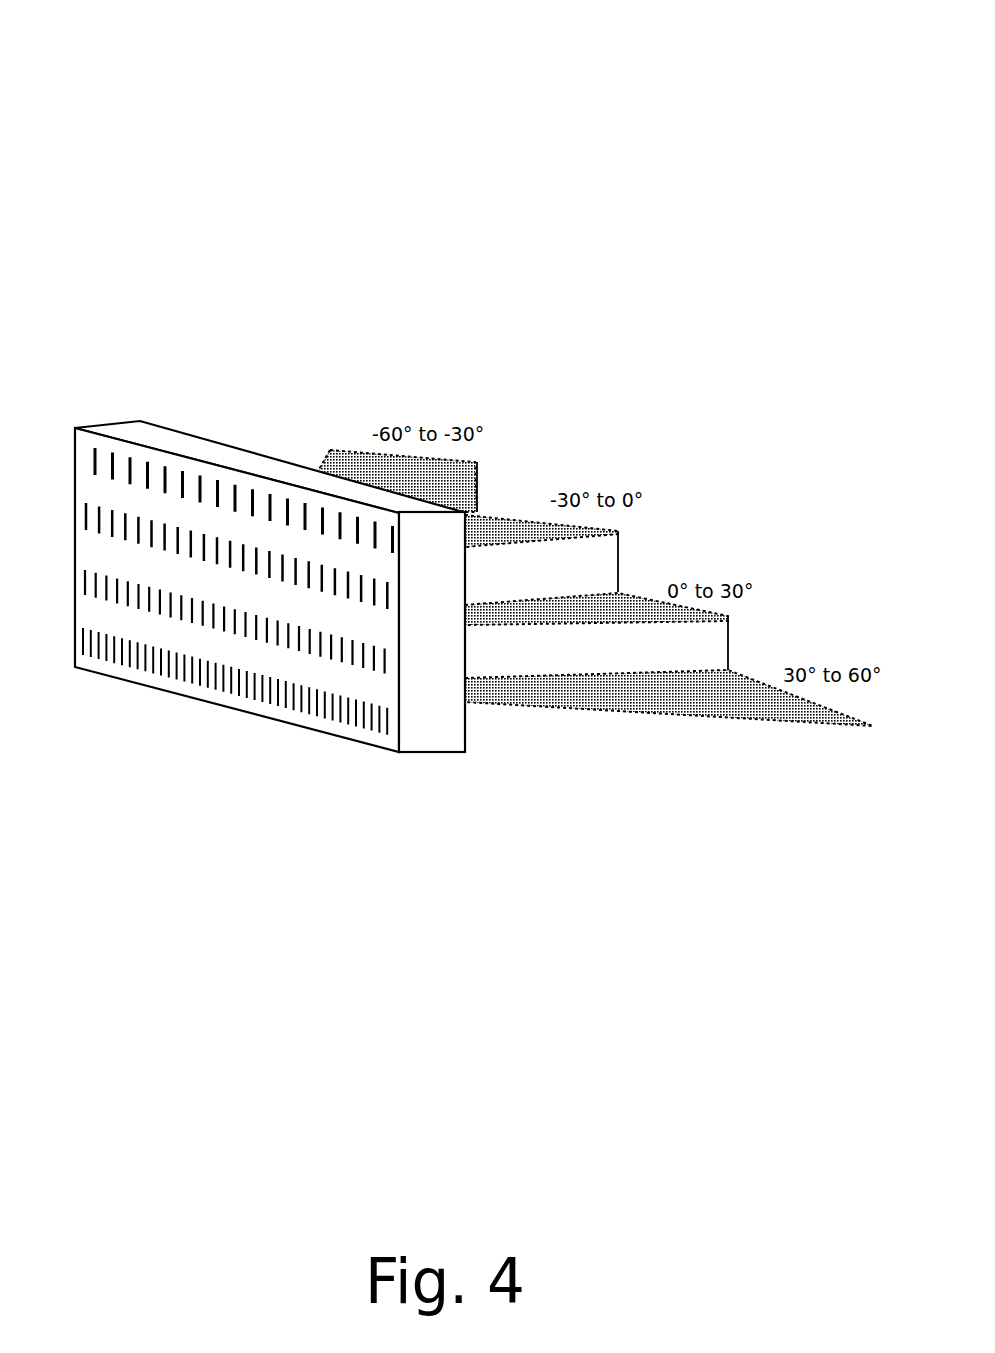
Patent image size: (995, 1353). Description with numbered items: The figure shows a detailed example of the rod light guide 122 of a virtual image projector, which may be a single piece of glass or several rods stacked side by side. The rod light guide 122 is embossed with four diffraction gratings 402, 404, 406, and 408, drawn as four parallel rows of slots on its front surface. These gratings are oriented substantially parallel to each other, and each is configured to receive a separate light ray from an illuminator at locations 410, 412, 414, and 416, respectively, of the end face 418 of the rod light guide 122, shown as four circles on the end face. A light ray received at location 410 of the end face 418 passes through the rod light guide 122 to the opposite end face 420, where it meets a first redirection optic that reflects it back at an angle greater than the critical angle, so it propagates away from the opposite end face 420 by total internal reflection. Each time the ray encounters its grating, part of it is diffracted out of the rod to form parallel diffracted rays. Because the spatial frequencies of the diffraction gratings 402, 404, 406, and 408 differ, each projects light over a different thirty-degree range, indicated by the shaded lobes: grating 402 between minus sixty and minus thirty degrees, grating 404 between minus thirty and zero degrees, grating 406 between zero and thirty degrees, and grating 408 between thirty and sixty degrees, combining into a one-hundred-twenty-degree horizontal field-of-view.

The rod light guide 122 is at (237, 418).
The diffraction grating 402 is at (95, 472).
The diffraction grating 404 is at (86, 530).
The diffraction grating 406 is at (85, 596).
The diffraction grating 408 is at (83, 652).
The light ray receiving location 410 is at (434, 547).
The light ray receiving location 412 is at (434, 604).
The light ray receiving location 414 is at (434, 661).
The light ray receiving location 416 is at (434, 718).
The end face 418 is at (429, 768).
The opposite end face 420 is at (106, 418).